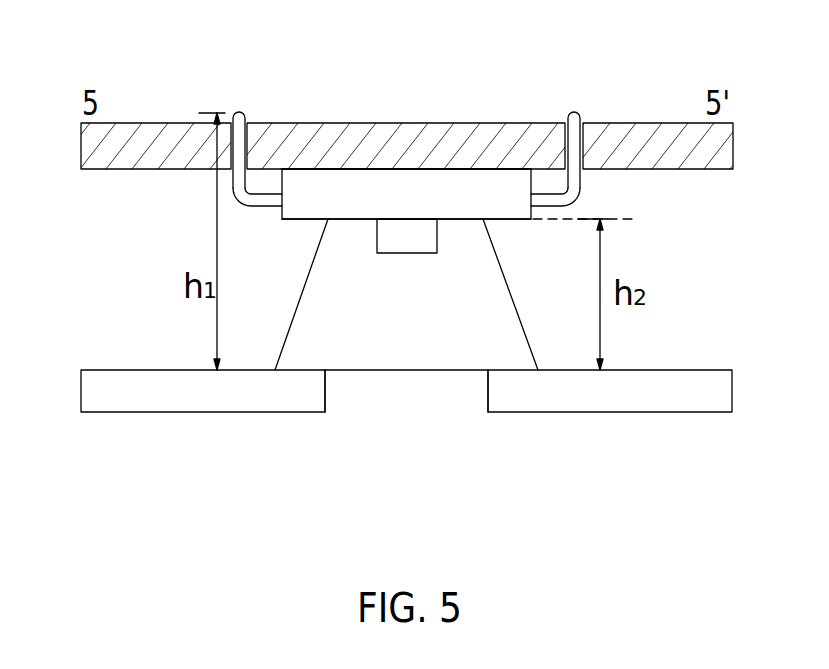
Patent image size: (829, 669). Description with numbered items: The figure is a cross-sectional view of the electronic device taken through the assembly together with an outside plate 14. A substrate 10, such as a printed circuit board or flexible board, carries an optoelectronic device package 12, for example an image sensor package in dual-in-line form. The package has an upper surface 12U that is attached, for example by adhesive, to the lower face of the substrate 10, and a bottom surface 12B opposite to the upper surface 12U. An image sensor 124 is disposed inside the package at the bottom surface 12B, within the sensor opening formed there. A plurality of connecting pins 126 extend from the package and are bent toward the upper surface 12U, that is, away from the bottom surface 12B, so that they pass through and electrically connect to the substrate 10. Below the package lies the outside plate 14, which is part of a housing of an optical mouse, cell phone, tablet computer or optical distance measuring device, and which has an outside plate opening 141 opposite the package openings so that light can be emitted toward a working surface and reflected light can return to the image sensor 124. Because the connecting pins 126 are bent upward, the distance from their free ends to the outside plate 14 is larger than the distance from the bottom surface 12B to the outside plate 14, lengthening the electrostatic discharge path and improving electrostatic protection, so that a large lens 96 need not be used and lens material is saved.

The substrate 10 is at (457, 132).
The optoelectronic device package 12 is at (358, 187).
The upper surface 12U is at (310, 168).
The bottom surface 12B is at (313, 220).
The image sensor 124 is at (403, 242).
The connecting pins 126 is at (577, 115).
The outside plate 14 is at (583, 400).
The outside plate opening 141 is at (352, 405).
The lens 96 is at (440, 350).